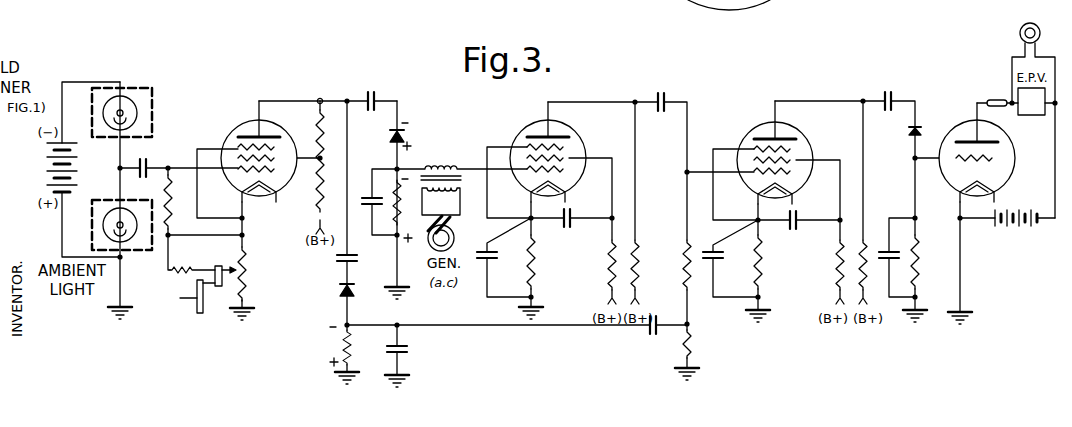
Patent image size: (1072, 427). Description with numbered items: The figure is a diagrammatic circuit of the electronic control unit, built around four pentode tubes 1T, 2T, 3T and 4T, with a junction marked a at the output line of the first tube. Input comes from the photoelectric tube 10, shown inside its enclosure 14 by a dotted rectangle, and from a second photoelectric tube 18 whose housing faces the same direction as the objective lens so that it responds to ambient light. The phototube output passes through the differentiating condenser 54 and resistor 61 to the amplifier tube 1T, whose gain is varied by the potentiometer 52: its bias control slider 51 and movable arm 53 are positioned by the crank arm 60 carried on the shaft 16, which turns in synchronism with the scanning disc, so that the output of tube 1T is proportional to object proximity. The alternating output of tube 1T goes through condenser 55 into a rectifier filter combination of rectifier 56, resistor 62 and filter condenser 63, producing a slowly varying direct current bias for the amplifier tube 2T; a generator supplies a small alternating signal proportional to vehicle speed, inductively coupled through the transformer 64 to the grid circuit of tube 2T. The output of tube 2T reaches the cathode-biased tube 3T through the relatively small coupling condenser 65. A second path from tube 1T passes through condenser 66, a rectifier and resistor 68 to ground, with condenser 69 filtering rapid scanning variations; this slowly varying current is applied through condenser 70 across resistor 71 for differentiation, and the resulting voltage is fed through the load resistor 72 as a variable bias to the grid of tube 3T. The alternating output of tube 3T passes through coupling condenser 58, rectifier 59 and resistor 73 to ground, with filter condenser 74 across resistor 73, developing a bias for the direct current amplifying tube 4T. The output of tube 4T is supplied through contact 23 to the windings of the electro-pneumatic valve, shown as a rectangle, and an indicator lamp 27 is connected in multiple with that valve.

The photoelectric tube 10 is at (138, 110).
The enclosure 14 is at (134, 100).
The photoelectric tube 18 is at (128, 243).
The shaft 16 is at (190, 297).
The contact 23 is at (993, 99).
The indicator lamp 27 is at (1030, 23).
The bias control slider 51 is at (221, 286).
The potentiometer 52 is at (245, 284).
The movable arm 53 is at (215, 267).
The differentiating condenser 54 is at (148, 162).
The condenser 55 is at (370, 94).
The rectifier 56 is at (389, 133).
The coupling condenser 58 is at (894, 99).
The rectifier 59 is at (909, 132).
The crank arm 60 is at (197, 306).
The resistor 61 is at (172, 201).
The resistor 62 is at (401, 207).
The filter condenser 63 is at (371, 199).
The transformer 64 is at (436, 166).
The coupling condenser 65 is at (665, 99).
The condenser 66 is at (356, 260).
The resistor 68 is at (351, 348).
The condenser 69 is at (401, 346).
The condenser 70 is at (654, 333).
The resistor 71 is at (690, 351).
The load resistor 72 is at (685, 263).
The resistor 73 is at (917, 267).
The filter condenser 74 is at (889, 256).
The amplifier tube 1T is at (234, 129).
The amplifier tube 2T is at (522, 131).
The amplifier tube 3T is at (753, 131).
The direct current amplifying tube 4T is at (956, 127).
The junction point a is at (348, 99).